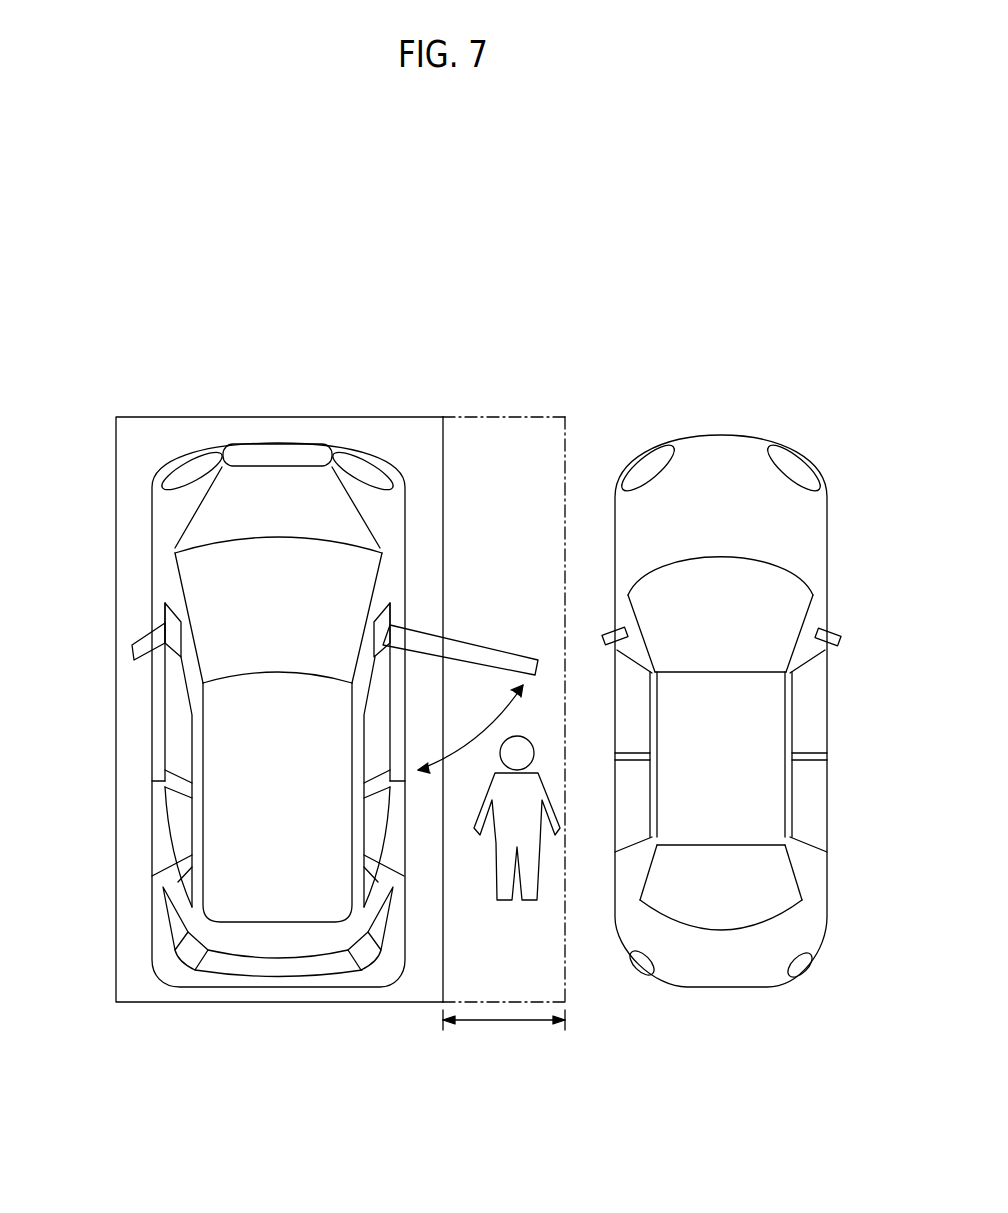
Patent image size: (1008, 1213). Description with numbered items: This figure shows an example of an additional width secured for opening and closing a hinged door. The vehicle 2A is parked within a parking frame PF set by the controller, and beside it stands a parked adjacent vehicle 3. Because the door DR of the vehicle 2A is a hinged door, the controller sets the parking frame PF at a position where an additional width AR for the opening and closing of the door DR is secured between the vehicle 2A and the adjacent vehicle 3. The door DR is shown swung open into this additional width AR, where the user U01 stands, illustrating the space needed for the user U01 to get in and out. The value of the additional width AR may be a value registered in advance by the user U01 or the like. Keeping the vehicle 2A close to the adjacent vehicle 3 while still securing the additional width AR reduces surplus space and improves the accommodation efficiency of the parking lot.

The vehicle 2A is at (150, 807).
The parking frame PF is at (116, 928).
The door DR is at (478, 651).
The user U01 is at (497, 857).
The additional width AR is at (504, 1034).
The adjacent vehicle 3 is at (829, 800).